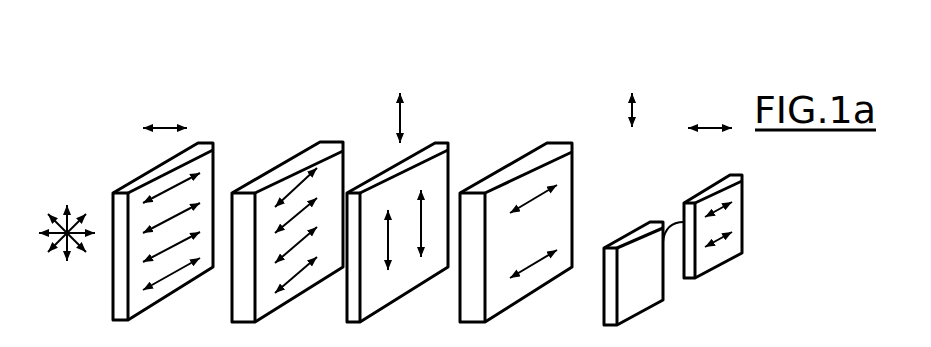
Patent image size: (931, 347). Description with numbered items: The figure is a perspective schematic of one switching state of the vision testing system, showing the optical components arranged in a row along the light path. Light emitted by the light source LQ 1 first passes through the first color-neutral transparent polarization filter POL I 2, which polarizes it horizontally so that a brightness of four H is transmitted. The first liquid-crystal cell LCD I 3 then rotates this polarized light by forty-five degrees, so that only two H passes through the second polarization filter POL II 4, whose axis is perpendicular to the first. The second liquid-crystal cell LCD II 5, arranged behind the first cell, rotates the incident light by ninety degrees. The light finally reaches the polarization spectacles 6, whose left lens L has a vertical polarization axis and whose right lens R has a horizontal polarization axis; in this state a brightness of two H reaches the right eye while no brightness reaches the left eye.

The light source LQ 1 is at (67, 147).
The first polarization filter POL I 2 is at (163, 176).
The first liquid-crystal cell LCD I 3 is at (287, 177).
The second polarization filter POL II 4 is at (397, 177).
The second liquid-crystal cell LCD II 5 is at (516, 177).
The polarization spectacles 6 is at (676, 179).